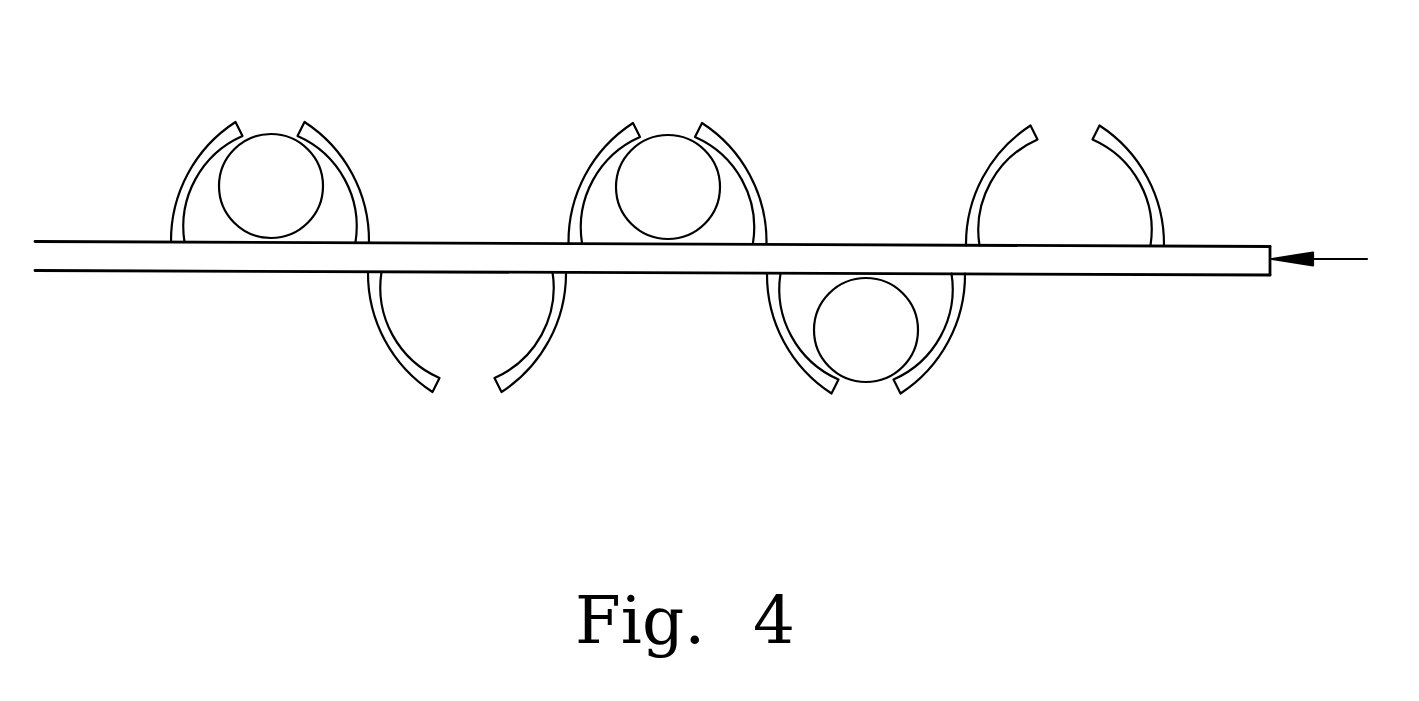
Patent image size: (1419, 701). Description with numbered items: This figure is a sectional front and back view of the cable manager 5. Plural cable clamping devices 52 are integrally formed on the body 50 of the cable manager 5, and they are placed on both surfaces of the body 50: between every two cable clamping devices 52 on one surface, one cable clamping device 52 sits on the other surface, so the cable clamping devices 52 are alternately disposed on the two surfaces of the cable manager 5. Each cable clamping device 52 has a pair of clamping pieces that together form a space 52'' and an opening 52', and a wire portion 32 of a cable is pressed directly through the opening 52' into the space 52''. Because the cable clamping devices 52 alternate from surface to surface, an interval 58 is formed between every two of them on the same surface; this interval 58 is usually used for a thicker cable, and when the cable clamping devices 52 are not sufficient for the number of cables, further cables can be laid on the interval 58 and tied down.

The cable manager 5 is at (1332, 262).
The wire portion 32 is at (653, 170).
The body 50 is at (434, 259).
The cable clamping device 52 is at (730, 200).
The opening 52' is at (1066, 81).
The space 52'' is at (1112, 352).
The interval 58 is at (970, 170).